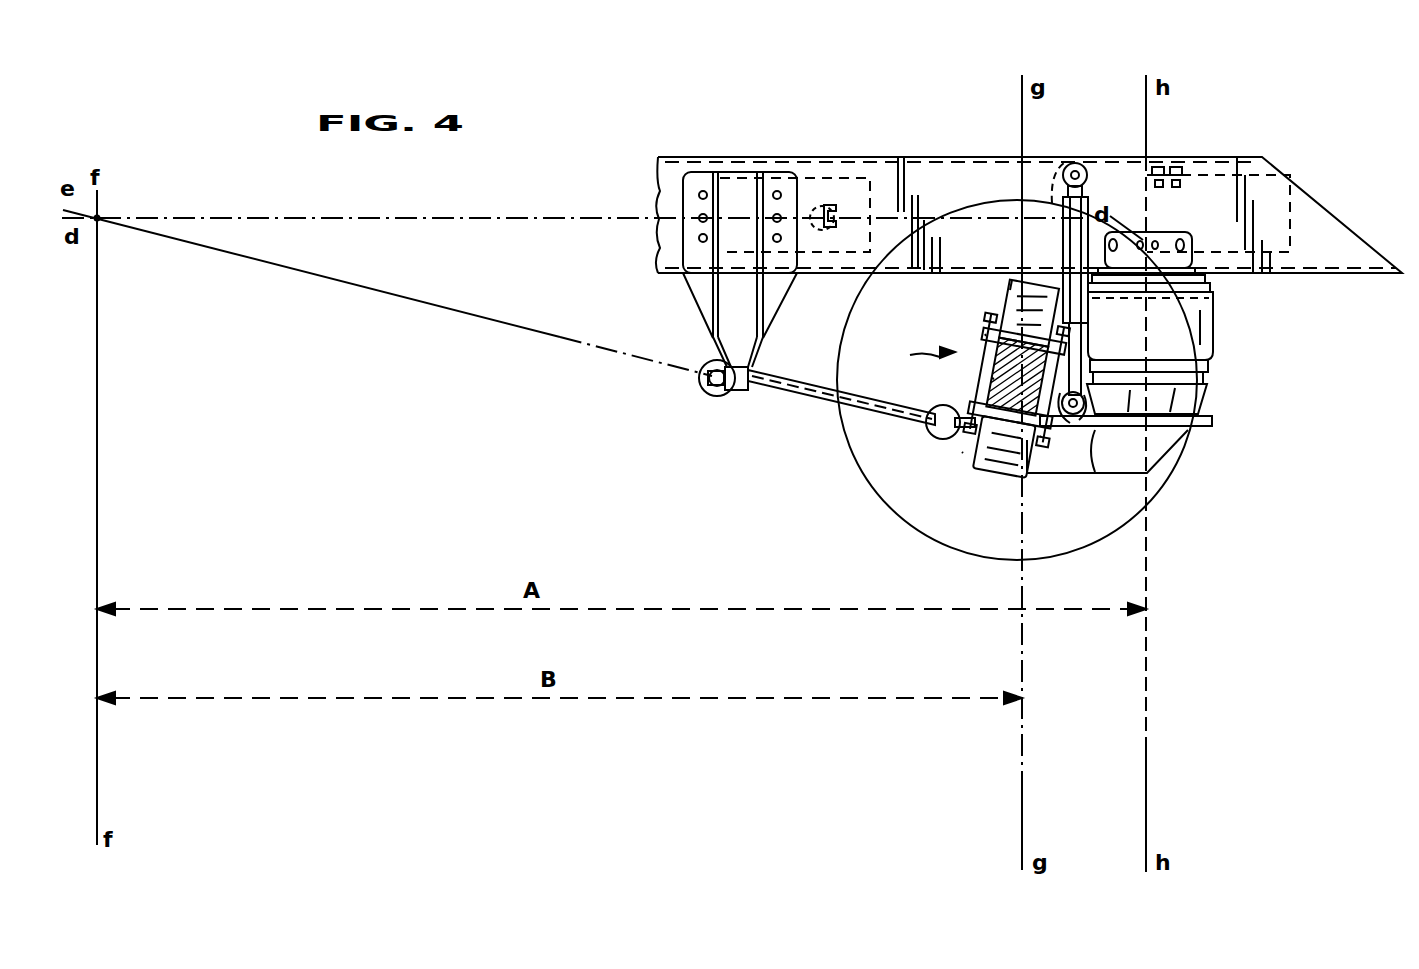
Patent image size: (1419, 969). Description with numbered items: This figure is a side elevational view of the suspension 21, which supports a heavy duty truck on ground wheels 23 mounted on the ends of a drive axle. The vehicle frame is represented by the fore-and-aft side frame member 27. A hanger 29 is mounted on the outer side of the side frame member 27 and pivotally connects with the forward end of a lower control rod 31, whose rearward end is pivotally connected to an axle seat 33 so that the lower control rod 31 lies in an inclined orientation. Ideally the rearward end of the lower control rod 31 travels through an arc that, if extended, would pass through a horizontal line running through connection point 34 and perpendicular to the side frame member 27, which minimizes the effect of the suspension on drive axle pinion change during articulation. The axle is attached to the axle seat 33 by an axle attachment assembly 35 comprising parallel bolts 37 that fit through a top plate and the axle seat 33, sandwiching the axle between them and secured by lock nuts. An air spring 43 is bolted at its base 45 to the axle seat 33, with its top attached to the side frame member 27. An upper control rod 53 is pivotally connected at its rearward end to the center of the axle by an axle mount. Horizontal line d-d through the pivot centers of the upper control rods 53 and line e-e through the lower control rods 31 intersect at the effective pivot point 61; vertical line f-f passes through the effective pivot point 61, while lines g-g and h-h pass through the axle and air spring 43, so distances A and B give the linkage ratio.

The suspension 21 is at (1177, 516).
The ground wheels 23 is at (934, 536).
The side frame members 27 is at (765, 152).
The hangers 29 is at (690, 300).
The lower control rods 31 is at (790, 394).
The axle seats 33 is at (1195, 442).
The connection point 34 is at (1080, 160).
The axle attachment assemblies 35 is at (914, 356).
The bolts 37 is at (1075, 415).
The air spring 43 is at (1216, 322).
The base 45 is at (1195, 406).
The upper control rods 53 is at (915, 215).
The effective pivot point 61 is at (100, 215).